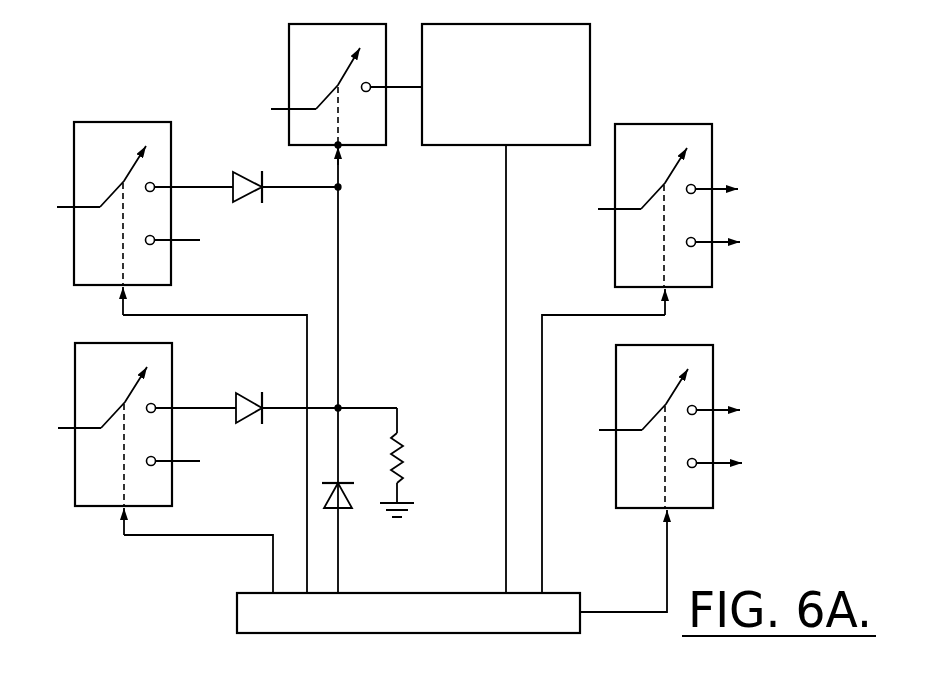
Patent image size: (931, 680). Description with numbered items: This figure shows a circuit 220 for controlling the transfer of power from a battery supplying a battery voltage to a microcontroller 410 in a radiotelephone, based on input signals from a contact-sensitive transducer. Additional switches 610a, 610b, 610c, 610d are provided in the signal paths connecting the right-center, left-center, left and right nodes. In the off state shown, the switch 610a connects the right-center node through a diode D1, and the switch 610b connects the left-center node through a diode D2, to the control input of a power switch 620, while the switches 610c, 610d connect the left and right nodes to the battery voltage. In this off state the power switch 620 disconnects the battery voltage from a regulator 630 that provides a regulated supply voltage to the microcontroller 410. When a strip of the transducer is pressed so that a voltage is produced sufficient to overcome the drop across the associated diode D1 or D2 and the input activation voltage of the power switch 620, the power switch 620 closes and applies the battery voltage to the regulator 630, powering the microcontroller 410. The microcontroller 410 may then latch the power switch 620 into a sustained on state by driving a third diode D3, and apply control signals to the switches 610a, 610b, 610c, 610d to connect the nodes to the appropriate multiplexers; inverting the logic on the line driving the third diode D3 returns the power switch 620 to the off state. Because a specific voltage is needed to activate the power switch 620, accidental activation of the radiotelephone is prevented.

The switch control circuit 220 is at (432, 328).
The microcontroller 410 is at (408, 595).
The switch 610a is at (164, 342).
The switch 610b is at (161, 453).
The switch 610c is at (692, 342).
The switch 610d is at (703, 462).
The power switch 620 is at (317, 308).
The regulator 630 is at (498, 308).
The diode D1 is at (260, 168).
The diode D2 is at (290, 389).
The third diode D3 is at (357, 521).